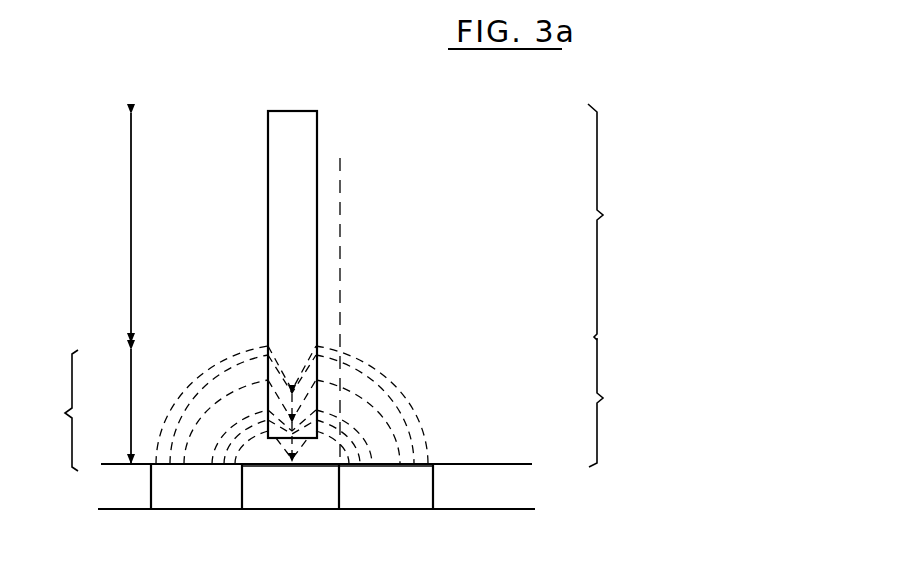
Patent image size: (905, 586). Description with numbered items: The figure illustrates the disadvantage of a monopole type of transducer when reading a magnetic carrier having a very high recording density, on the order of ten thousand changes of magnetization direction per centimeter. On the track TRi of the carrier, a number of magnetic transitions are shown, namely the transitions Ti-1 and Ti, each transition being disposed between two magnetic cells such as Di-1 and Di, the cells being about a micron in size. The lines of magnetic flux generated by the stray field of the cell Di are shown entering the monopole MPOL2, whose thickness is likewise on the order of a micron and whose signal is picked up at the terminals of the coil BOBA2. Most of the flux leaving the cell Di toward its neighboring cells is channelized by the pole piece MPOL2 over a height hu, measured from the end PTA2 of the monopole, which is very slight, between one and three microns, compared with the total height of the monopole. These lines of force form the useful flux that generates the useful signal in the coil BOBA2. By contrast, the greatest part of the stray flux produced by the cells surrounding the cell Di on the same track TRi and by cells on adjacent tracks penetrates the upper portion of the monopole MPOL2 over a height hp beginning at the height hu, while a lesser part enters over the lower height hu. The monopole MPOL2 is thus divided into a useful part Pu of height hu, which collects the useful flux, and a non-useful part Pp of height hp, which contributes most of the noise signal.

The monopole MPOL2 is at (268, 190).
The coil BOBA2 is at (340, 205).
The end of the monopole PTA2 is at (326, 436).
The track TRi is at (510, 463).
The magnetic cell Di-1 is at (182, 503).
The magnetic transition Ti-1 is at (243, 510).
The magnetic cell Di is at (293, 500).
The magnetic transition Ti is at (338, 510).
The non-useful part Pp is at (108, 227).
The height of the non-useful part hp is at (114, 227).
The useful part Pu is at (116, 406).
The height of the useful part hu is at (117, 406).